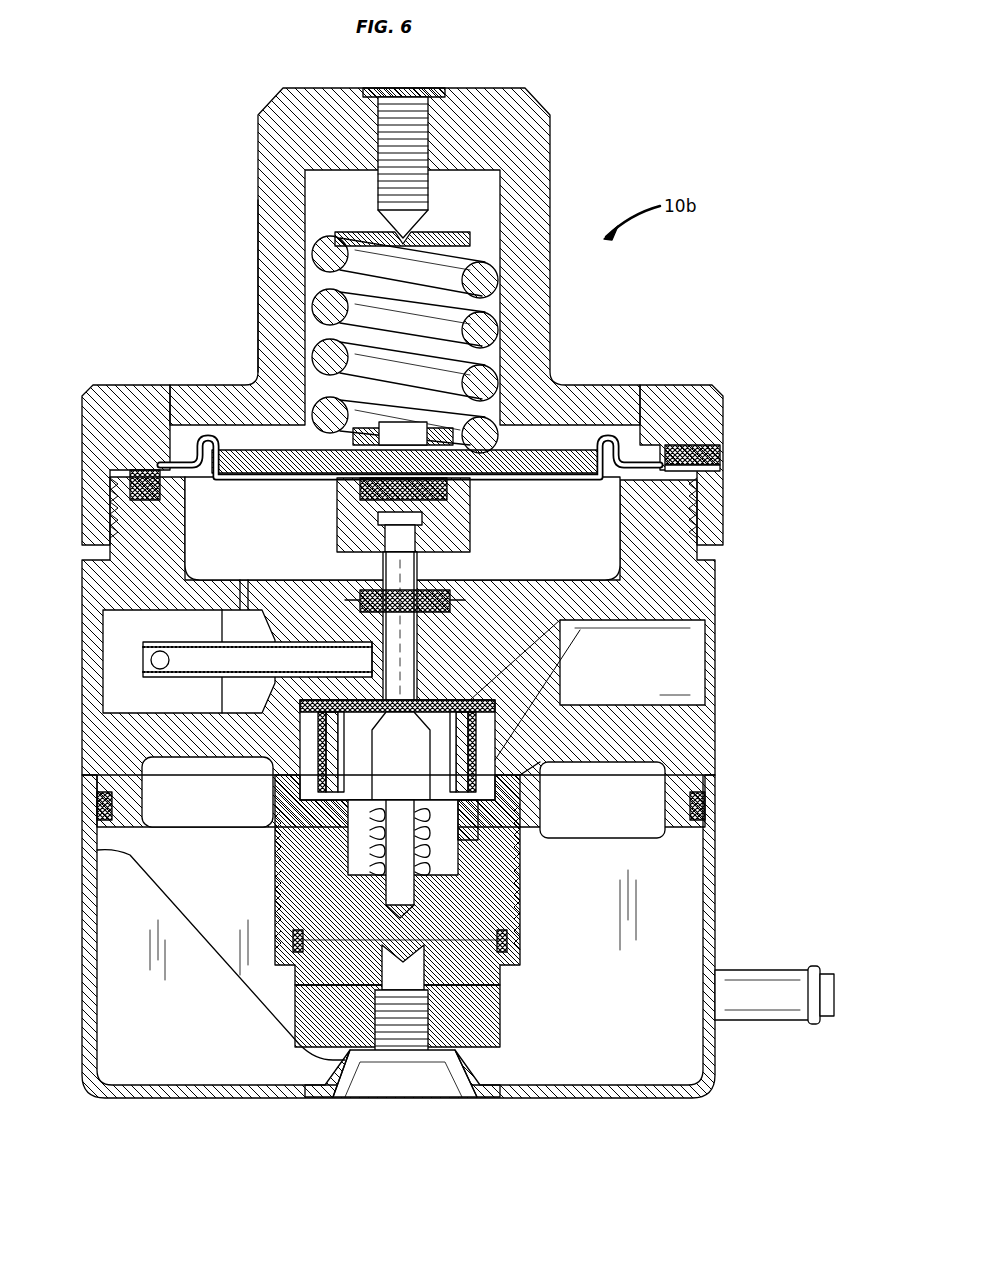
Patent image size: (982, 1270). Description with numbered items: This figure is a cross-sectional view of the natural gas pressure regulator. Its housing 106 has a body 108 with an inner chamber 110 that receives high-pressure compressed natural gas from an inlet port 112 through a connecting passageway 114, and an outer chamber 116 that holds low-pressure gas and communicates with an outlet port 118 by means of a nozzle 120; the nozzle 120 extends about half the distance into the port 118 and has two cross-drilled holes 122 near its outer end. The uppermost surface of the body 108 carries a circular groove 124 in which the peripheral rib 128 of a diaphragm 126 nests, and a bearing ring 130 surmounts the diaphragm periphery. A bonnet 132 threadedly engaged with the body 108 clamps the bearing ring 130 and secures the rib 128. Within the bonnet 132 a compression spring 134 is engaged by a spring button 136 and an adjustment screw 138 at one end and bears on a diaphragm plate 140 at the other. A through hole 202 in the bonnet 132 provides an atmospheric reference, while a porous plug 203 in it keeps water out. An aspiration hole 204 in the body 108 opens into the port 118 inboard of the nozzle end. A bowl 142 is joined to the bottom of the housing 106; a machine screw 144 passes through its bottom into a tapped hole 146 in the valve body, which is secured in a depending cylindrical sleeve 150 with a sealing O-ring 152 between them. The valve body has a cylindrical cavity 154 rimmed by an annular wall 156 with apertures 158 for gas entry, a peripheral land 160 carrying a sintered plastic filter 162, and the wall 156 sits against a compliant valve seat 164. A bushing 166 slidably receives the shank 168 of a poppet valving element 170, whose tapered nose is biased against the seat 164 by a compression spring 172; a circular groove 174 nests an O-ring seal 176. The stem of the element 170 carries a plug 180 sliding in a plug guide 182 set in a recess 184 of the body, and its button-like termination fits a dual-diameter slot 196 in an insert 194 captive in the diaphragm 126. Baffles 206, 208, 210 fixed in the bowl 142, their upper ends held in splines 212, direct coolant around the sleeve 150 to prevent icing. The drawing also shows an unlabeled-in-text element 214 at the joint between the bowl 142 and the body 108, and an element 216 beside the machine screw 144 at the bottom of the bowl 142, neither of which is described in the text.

The housing 106 is at (276, 328).
The body 108 is at (715, 598).
The inner chamber 110 is at (505, 735).
The inlet port 112 is at (700, 660).
The connecting passageway 114 is at (520, 762).
The outer chamber 116 is at (430, 655).
The outlet port 118 is at (130, 620).
The nozzle 120 is at (190, 652).
The holes 122 is at (150, 660).
The circular groove 124 is at (635, 525).
The diaphragm 126 is at (562, 476).
The peripheral rib 128 is at (172, 518).
The bearing ring 130 is at (95, 440).
The bonnet 132 is at (552, 185).
The compression spring 134 is at (500, 322).
The spring button 136 is at (445, 232).
The adjustment screw 138 is at (425, 72).
The diaphragm plate 140 is at (540, 445).
The bowl 142 is at (716, 900).
The machine screw 144 is at (432, 1099).
The tapped hole 146 is at (430, 1018).
The cylindrical sleeve 150 is at (282, 882).
The sealing O-ring 152 is at (508, 948).
The cylindrical cavity 154 is at (470, 810).
The annular wall 156 is at (320, 748).
The apertures 158 is at (387, 837).
The peripheral land 160 is at (316, 800).
The sintered plastic filter 162 is at (300, 770).
The valve seat 164 is at (487, 700).
The bushing 166 is at (400, 929).
The shank 168 is at (386, 890).
The valving element 170 is at (416, 775).
The compression spring 172 is at (445, 893).
The circular groove 174 is at (358, 680).
The O-ring seal 176 is at (318, 716).
The plug 180 is at (425, 578).
The plug guide 182 is at (462, 598).
The recess 184 is at (345, 600).
The insert 194 is at (470, 510).
The dual-diameter slot 196 is at (382, 556).
The through hole 202 is at (730, 442).
The porous plug 203 is at (730, 456).
The aspiration hole 204 is at (240, 580).
The baffle 206 is at (648, 1007).
The baffle 208 is at (205, 822).
The baffle 210 is at (184, 1007).
The splines 212 is at (622, 776).
The seal 214 is at (716, 810).
The washer 216 is at (482, 1080).